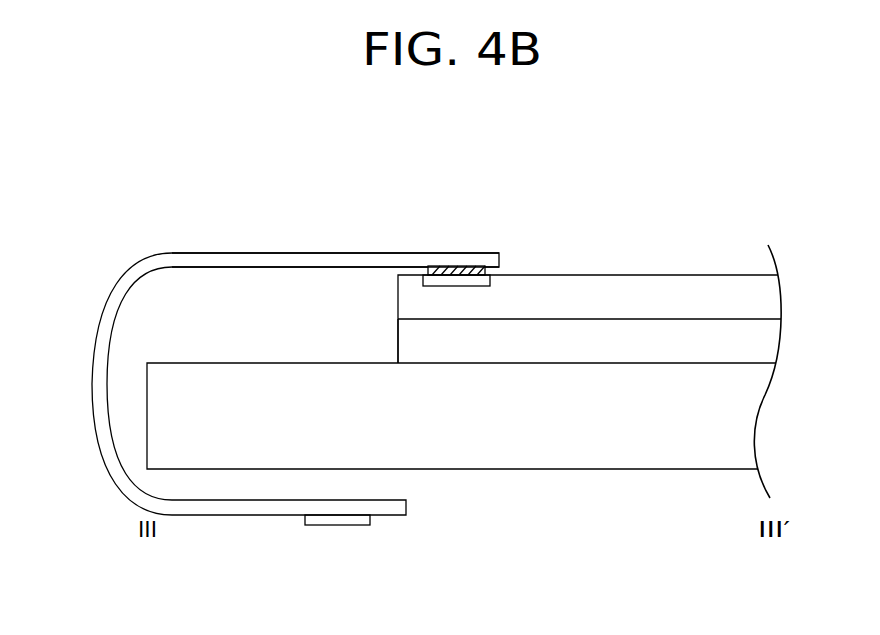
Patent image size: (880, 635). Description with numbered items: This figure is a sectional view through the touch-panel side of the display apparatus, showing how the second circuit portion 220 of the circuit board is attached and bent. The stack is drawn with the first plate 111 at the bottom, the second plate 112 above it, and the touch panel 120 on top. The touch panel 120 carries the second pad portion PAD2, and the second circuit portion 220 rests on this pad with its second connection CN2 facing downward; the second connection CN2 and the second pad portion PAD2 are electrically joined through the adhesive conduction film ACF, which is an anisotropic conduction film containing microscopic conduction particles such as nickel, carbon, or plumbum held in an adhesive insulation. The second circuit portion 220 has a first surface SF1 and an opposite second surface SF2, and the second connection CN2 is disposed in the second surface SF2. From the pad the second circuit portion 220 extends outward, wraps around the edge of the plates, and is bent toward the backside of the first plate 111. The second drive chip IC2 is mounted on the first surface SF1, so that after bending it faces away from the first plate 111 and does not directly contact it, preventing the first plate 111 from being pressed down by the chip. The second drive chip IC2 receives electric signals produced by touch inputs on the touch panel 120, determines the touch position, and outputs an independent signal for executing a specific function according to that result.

The second circuit portion 220 is at (103, 373).
The first surface SF1 is at (336, 253).
The second surface SF2 is at (297, 268).
The second connection CN2 is at (437, 266).
The adhesive conduction film ACF is at (455, 275).
The second pad portion PAD2 is at (468, 266).
The touch panel 120 is at (768, 300).
The second plate 112 is at (768, 344).
The first plate 111 is at (743, 420).
The second drive chip IC2 is at (340, 519).